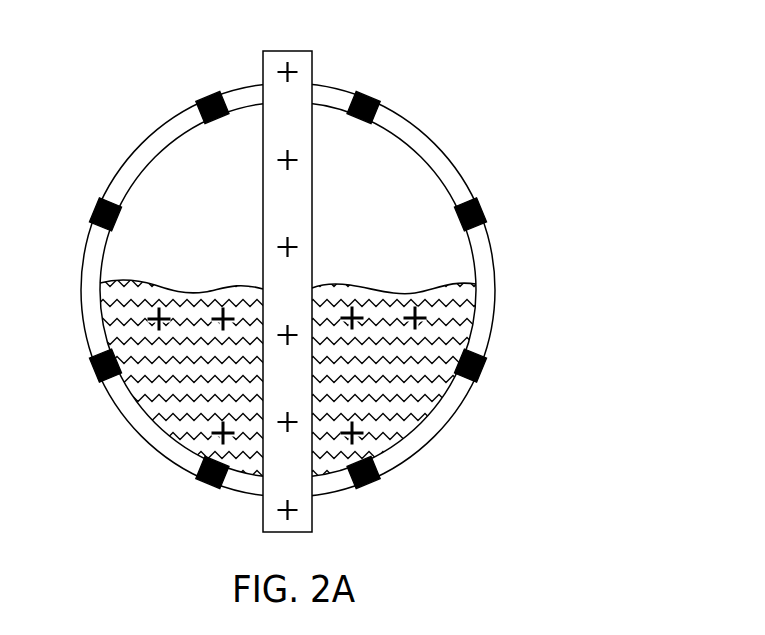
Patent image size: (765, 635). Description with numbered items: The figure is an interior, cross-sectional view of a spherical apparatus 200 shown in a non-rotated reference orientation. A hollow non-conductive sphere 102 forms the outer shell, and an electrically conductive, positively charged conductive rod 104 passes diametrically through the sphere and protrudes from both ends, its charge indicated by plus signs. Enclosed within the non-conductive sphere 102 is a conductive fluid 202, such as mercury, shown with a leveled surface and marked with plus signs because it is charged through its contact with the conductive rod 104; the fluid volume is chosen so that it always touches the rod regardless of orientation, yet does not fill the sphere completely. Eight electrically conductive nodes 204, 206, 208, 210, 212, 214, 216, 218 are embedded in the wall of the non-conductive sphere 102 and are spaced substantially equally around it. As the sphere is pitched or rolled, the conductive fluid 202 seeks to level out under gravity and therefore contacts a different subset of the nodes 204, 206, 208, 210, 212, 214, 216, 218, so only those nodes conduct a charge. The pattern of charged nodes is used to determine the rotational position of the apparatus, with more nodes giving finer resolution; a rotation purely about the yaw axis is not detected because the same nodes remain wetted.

The spherical apparatus 200 is at (552, 115).
The non-conductive sphere 102 is at (145, 140).
The conductive rod 104 is at (287, 51).
The conductive fluid 202 is at (458, 317).
The conductive node 204 is at (207, 484).
The conductive node 206 is at (97, 369).
The conductive node 208 is at (97, 214).
The conductive node 210 is at (207, 95).
The conductive node 212 is at (368, 97).
The conductive node 214 is at (481, 213).
The conductive node 216 is at (481, 372).
The conductive node 218 is at (372, 484).